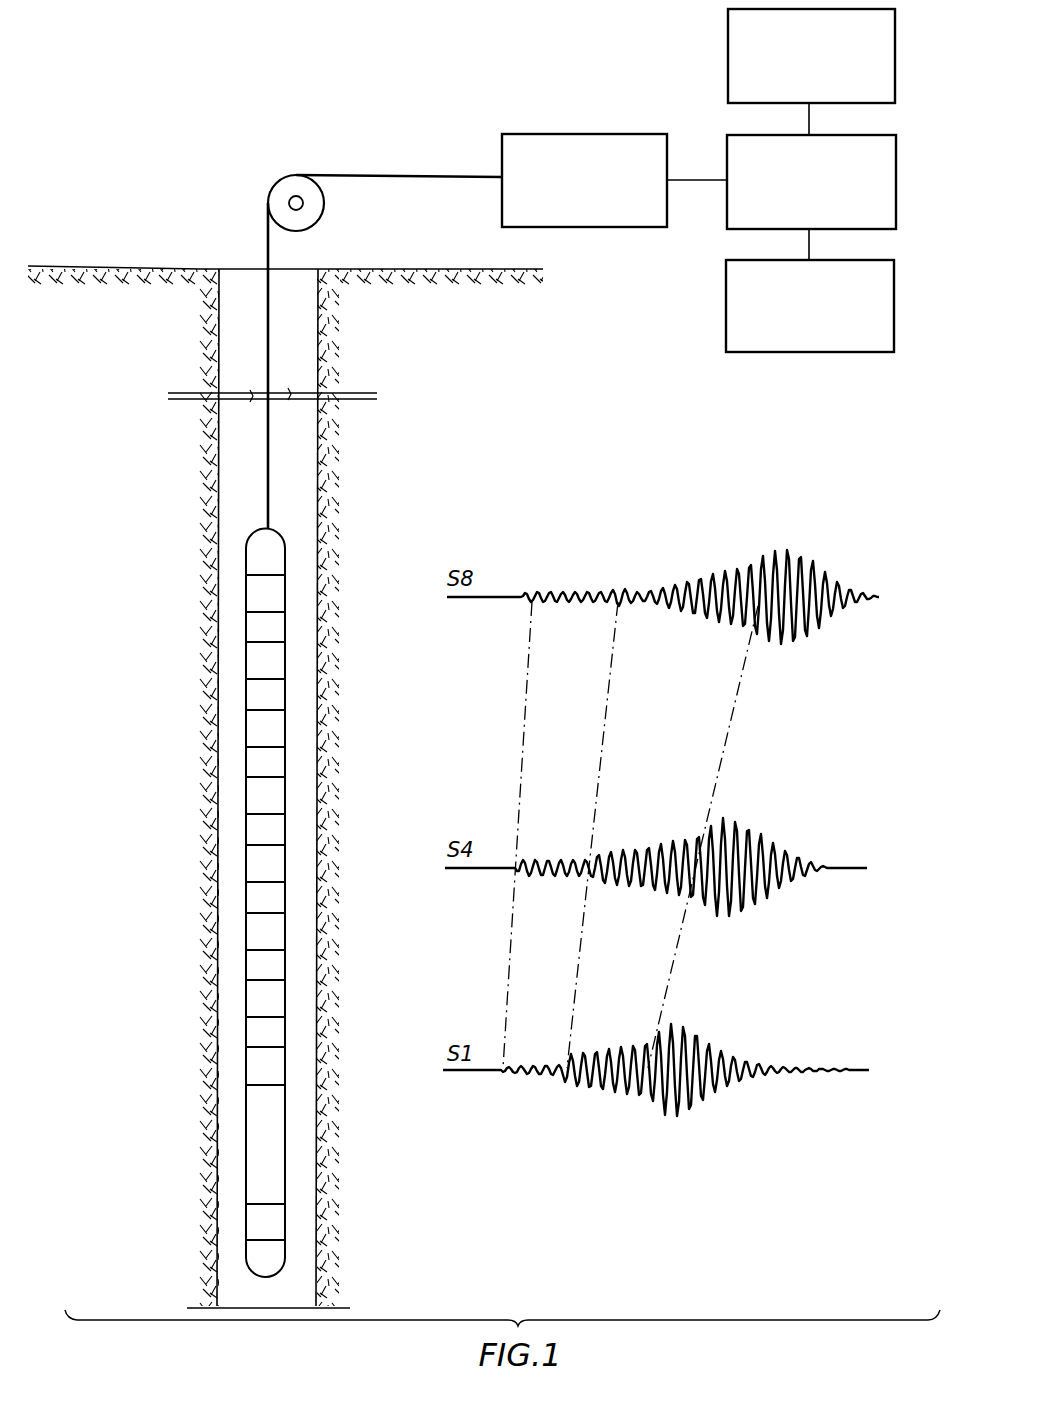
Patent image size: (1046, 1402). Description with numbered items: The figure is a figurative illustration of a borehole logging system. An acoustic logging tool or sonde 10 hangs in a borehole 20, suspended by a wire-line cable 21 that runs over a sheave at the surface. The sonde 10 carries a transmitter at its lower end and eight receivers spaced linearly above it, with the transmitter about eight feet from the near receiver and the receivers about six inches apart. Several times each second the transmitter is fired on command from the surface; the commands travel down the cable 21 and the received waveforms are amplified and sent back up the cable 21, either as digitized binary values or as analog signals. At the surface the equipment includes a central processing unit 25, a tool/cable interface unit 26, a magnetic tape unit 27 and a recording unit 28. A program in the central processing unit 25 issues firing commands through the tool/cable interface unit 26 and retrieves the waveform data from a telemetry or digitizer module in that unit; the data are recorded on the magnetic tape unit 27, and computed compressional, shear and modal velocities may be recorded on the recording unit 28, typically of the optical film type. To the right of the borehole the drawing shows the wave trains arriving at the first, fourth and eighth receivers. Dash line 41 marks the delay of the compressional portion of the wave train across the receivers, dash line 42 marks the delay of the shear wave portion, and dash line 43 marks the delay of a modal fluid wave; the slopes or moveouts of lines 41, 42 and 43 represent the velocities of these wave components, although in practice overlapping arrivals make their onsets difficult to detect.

The sonde 10 is at (226, 870).
The borehole 20 is at (217, 645).
The wire-line cable 21 is at (268, 233).
The central processing unit 25 is at (898, 191).
The tool/cable interface unit 26 is at (572, 134).
The magnetic tape unit 27 is at (897, 62).
The recording unit 28 is at (895, 319).
The dash line 41 is at (525, 744).
The dash line 42 is at (610, 744).
The dash line 43 is at (728, 744).